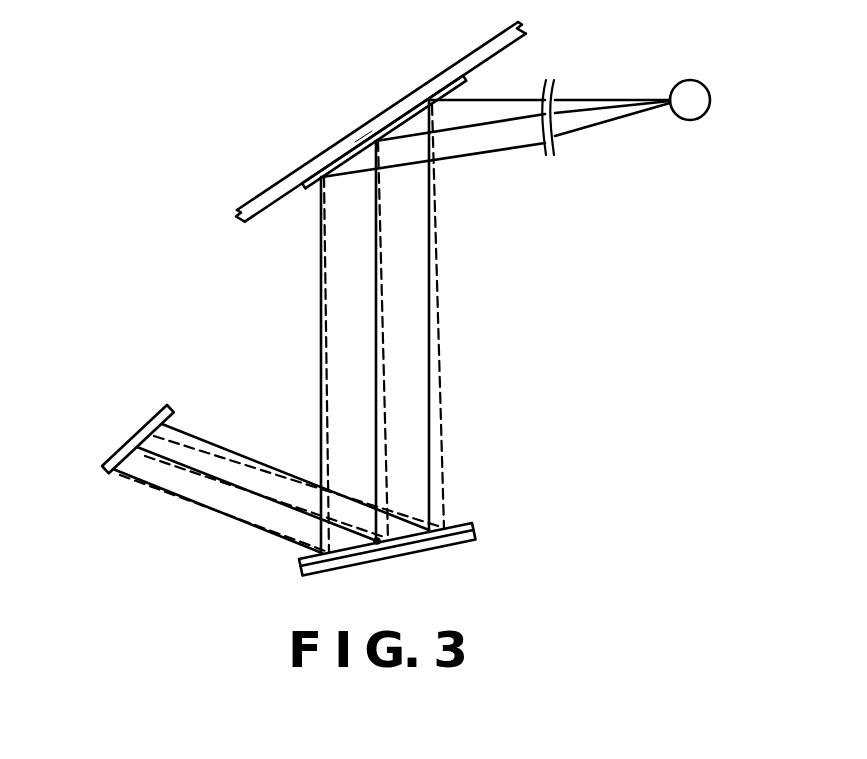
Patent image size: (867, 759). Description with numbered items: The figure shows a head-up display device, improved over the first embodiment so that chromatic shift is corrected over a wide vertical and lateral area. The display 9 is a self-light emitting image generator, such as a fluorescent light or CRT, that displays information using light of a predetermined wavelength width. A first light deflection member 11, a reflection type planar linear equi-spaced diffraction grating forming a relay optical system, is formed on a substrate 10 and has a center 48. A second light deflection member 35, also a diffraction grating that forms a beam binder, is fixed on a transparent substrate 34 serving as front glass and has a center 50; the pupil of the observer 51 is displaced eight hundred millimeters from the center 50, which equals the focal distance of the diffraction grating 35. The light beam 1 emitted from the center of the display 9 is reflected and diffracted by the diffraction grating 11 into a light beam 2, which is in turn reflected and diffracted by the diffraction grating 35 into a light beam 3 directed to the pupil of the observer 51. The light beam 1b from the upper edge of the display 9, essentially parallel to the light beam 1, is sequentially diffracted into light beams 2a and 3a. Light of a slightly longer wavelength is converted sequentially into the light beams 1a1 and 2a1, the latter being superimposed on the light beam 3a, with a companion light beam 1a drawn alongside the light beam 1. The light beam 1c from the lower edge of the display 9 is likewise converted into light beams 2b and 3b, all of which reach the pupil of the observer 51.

The light beam 1 is at (234, 484).
The light beam 1a is at (280, 500).
The light beam 1a1 is at (288, 468).
The light beam 1b is at (225, 447).
The light beam 1c is at (180, 498).
The light beam 2 is at (373, 333).
The light beam 2a is at (431, 313).
The light beam 2a1 is at (437, 273).
The light beam 2b is at (320, 348).
The light beam 3 is at (478, 128).
The light beam 3a is at (493, 99).
The light beam 3b is at (520, 148).
The display 9 is at (107, 460).
The substrate 10 is at (477, 535).
The first light deflection member 11 is at (474, 526).
The transparent substrate 34 is at (453, 67).
The second light deflection member 35 is at (402, 112).
The center of the first light deflection member 48 is at (380, 537).
The center of the second light deflection member 50 is at (364, 138).
The observer 51 is at (690, 88).